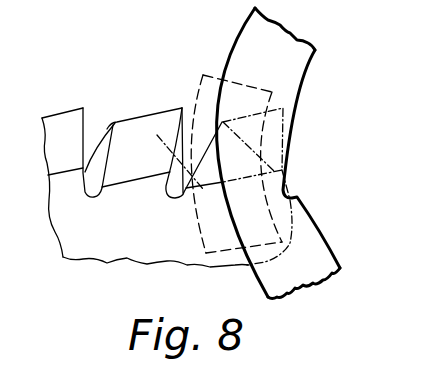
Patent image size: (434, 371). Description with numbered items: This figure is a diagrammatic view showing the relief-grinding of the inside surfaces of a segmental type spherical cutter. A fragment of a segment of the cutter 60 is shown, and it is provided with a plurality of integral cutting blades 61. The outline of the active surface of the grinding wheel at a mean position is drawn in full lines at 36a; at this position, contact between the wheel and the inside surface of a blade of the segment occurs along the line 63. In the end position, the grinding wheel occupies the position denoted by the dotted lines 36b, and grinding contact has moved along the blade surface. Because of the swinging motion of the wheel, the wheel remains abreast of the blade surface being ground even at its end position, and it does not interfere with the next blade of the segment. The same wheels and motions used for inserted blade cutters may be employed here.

The segment of a cutter 60 is at (124, 254).
The integral cutting blades 61 is at (135, 122).
The line of contact 63 is at (170, 153).
The active surface of the grinding wheel at mean position 36a is at (295, 88).
The grinding wheel in end position 36b is at (190, 210).